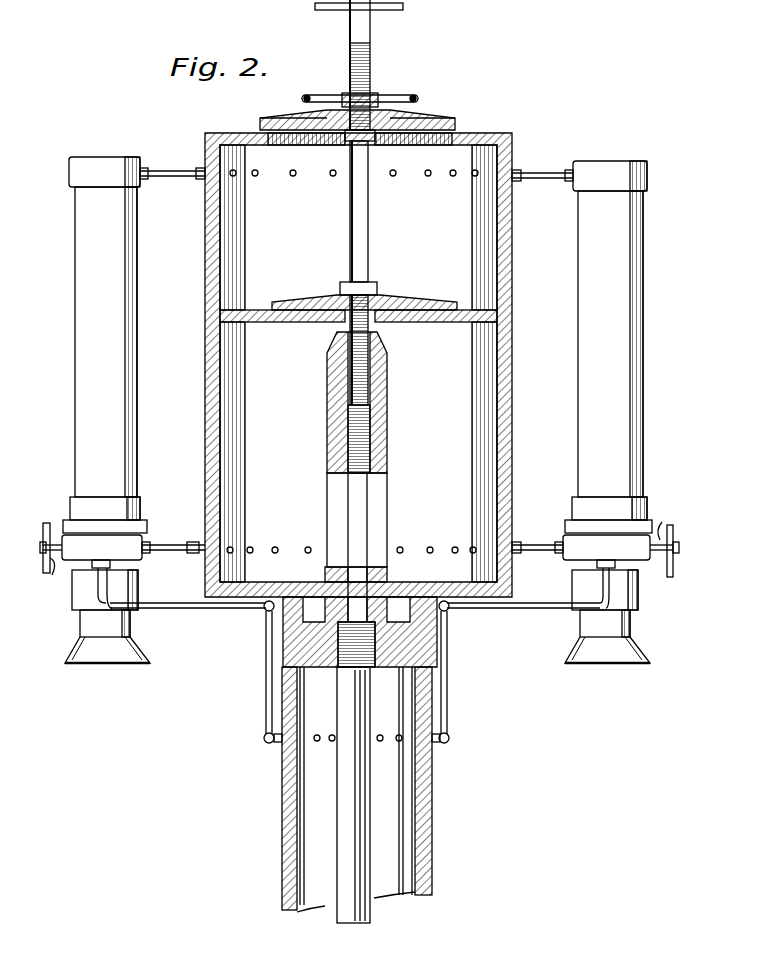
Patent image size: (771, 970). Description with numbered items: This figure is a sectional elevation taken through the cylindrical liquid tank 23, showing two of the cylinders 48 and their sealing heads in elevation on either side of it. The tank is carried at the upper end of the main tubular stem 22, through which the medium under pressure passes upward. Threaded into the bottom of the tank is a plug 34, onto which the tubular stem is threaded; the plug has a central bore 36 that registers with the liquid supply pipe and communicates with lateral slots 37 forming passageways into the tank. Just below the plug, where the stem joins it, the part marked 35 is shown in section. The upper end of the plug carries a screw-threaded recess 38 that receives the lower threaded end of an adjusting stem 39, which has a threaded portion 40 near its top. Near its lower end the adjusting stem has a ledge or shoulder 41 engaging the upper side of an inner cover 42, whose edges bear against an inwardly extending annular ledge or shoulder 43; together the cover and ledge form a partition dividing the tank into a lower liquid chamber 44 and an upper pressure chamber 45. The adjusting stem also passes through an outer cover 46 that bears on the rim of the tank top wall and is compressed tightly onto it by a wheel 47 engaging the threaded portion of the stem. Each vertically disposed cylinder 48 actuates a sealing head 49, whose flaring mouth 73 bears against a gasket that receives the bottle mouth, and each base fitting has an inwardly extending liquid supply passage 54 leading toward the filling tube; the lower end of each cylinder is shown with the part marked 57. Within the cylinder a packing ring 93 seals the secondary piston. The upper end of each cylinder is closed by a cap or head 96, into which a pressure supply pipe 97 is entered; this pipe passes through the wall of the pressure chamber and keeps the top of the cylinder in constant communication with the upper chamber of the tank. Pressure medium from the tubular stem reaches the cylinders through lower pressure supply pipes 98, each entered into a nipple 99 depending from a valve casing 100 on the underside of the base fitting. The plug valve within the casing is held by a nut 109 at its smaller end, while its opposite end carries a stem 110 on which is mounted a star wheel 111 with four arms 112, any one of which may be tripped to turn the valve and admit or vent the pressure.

The main tubular stem 22 is at (432, 778).
The cylindrical liquid tank 23 is at (342, 365).
The plug 34 is at (380, 576).
The nut 35 is at (340, 665).
The central bore 36 is at (358, 575).
The lateral slots 37 is at (380, 490).
The screw-threaded recess 38 is at (387, 415).
The adjusting stem 39 is at (370, 250).
The threaded portion 40 is at (370, 54).
The ledge or shoulder 41 is at (378, 288).
The inner cover 42 is at (425, 301).
The annular ledge or shoulder 43 is at (256, 323).
The lower liquid chamber 44 is at (351, 482).
The upper pressure chamber 45 is at (354, 202).
The outer cover 46 is at (425, 118).
The wheel 47 is at (405, 96).
The cylinders 48 is at (658, 347).
The sealing head 49 is at (150, 652).
The liquid supply passage 54 is at (165, 544).
The cap 57 is at (138, 500).
The flaring mouth 73 is at (125, 664).
The packing ring 93 is at (343, 826).
The cap or head 96 is at (104, 160).
The pressure supply pipe 97 is at (170, 170).
The lower pressure supply pipes 98 is at (266, 646).
The nipple 99 is at (99, 567).
The valve casing 100 is at (356, 548).
The nut 109 is at (141, 556).
The stem 110 is at (50, 580).
The star wheel 111 is at (58, 524).
The arms 112 is at (44, 552).